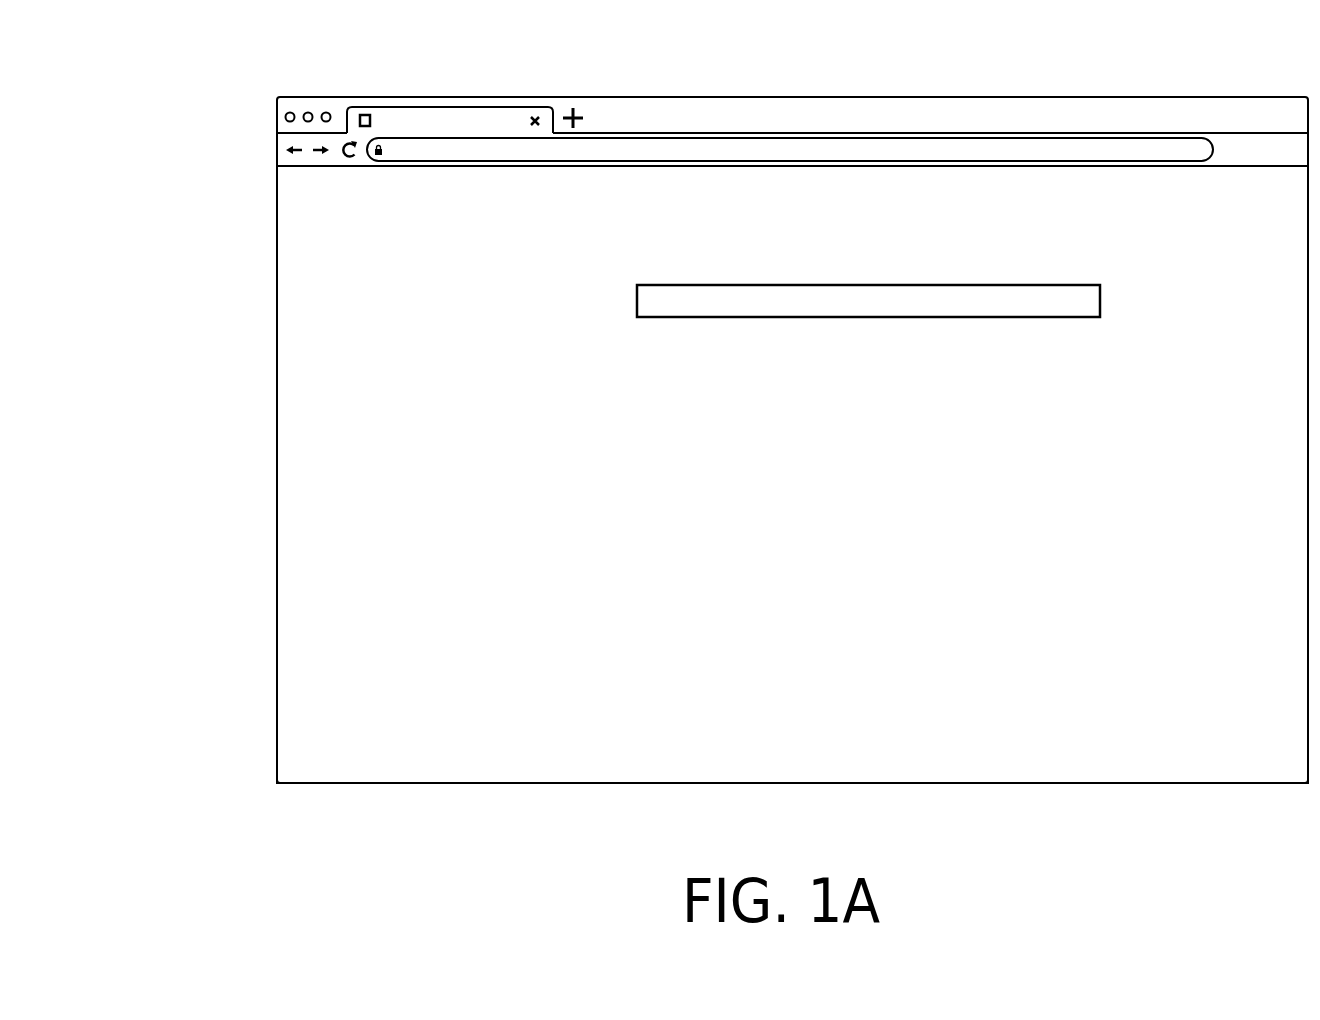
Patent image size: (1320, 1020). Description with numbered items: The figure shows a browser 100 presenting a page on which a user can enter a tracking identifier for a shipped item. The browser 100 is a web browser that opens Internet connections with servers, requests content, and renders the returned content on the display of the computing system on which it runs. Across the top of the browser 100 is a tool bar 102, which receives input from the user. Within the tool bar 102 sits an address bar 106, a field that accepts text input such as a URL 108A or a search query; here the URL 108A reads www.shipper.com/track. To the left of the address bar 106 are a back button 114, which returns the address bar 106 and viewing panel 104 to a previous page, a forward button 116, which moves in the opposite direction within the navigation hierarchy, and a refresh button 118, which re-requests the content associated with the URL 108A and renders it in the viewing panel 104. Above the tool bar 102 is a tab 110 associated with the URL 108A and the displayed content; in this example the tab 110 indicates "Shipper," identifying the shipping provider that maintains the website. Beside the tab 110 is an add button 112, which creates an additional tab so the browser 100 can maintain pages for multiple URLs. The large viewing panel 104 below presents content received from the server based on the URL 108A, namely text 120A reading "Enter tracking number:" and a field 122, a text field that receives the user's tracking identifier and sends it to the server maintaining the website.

The browser 100 is at (390, 85).
The tool bar 102 is at (252, 155).
The viewing panel 104 is at (772, 662).
The address bar 106 is at (938, 152).
The Universal Resource Locator (URL) 108A is at (572, 169).
The tab 110 is at (487, 107).
The add button 112 is at (584, 120).
The back button 114 is at (295, 161).
The forward button 116 is at (322, 161).
The refresh button 118 is at (357, 162).
The text 120A is at (495, 323).
The field 122 is at (880, 318).